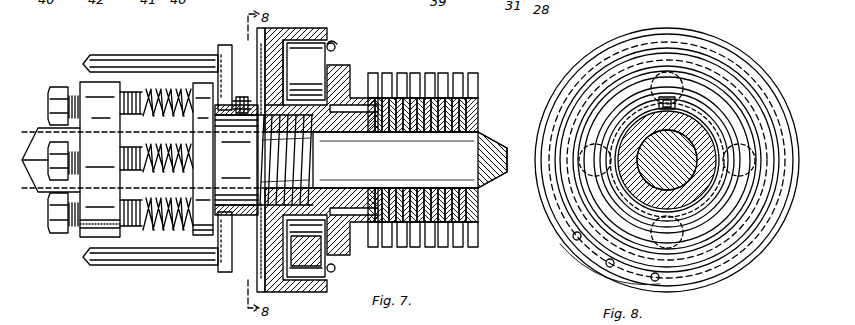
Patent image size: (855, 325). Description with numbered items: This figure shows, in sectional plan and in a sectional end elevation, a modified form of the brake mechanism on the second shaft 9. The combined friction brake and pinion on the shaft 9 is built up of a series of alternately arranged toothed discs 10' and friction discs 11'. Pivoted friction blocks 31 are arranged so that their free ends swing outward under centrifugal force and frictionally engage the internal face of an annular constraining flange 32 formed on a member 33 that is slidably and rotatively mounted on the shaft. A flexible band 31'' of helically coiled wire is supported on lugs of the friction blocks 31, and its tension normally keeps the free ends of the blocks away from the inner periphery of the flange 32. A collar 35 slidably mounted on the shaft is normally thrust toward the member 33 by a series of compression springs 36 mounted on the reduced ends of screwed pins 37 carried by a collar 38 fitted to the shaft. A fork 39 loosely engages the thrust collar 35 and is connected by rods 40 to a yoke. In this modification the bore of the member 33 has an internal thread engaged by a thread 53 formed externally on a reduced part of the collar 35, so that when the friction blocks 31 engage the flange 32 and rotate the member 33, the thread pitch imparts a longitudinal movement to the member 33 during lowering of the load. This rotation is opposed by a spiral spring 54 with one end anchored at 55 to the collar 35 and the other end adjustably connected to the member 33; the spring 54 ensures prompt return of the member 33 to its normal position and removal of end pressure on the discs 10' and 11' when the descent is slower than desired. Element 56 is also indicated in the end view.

In FIG. 7, the second shaft 9 is at (410, 160).
In FIG. 7, the toothed discs 10' is at (423, 91).
In FIG. 7, the friction discs 11' is at (423, 206).
In FIG. 8, the friction blocks 31 is at (674, 160).
In FIG. 7, the flexible band 31'' is at (328, 163).
In FIG. 7, the annular constraining flange 32 is at (307, 36).
In FIG. 7, the member 33 is at (283, 232).
In FIG. 7, the collar 35 is at (198, 238).
In FIG. 8, the collar 35 is at (700, 126).
In FIG. 7, the compression springs 36 is at (160, 88).
In FIG. 7, the screwed pins 37 is at (70, 95).
In FIG. 7, the collar 38 is at (80, 245).
In FIG. 7, the fork 39 is at (220, 273).
In FIG. 7, the rods 40 is at (128, 266).
In FIG. 7, the thread 53 is at (306, 155).
In FIG. 7, the spiral spring 54 is at (257, 50).
In FIG. 8, the spiral spring 54 is at (633, 268).
In FIG. 7, the anchor point 55 is at (244, 96).
In FIG. 8, the anchor point 55 is at (573, 238).
In FIG. 8, the key 56 is at (672, 100).